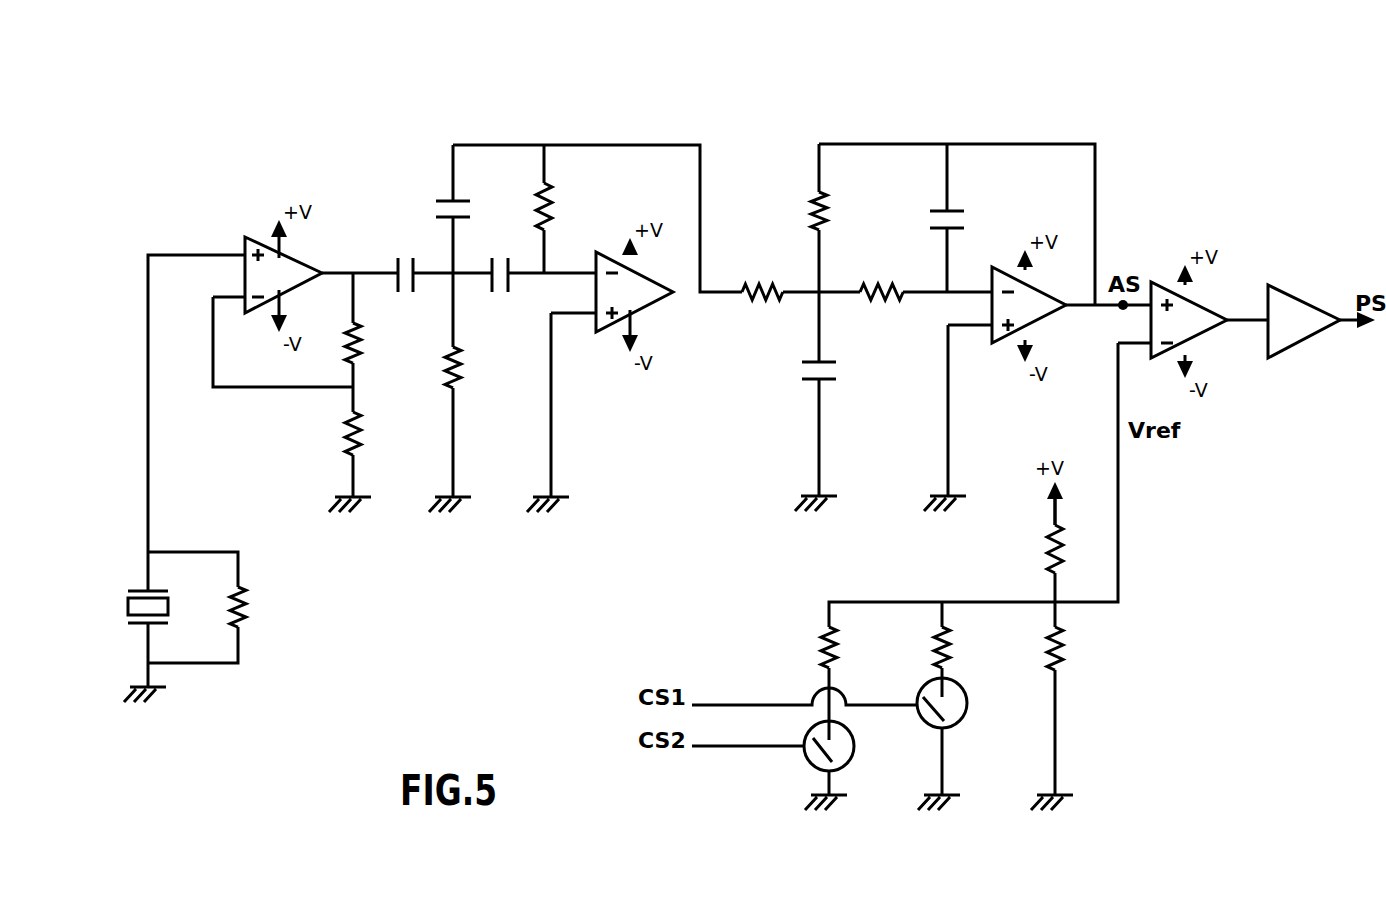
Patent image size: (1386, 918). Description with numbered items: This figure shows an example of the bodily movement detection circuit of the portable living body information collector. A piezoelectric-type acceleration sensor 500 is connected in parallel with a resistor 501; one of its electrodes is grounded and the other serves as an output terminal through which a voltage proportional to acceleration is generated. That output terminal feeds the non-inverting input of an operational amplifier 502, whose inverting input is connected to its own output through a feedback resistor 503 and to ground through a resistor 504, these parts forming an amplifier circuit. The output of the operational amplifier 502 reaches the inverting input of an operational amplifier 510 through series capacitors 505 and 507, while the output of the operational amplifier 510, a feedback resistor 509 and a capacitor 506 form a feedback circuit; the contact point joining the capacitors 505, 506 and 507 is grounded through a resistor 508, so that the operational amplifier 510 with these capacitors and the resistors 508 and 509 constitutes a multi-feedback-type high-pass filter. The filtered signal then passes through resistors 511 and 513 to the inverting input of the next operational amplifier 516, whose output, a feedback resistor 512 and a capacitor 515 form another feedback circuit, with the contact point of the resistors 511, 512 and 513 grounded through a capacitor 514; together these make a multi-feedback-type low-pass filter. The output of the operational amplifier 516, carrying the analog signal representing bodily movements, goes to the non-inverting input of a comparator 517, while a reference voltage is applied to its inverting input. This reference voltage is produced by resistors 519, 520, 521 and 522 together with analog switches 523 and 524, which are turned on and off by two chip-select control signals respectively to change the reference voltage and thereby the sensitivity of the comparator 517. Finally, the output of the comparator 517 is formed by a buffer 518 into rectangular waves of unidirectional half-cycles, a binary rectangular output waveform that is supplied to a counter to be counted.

The piezoelectric-type acceleration sensor 500 is at (131, 592).
The resistor 501 is at (252, 607).
The operational amplifier 502 is at (243, 238).
The feedback resistor 503 is at (363, 350).
The resistor 504 is at (344, 430).
The capacitor 505 is at (401, 252).
The capacitor 506 is at (427, 198).
The capacitor 507 is at (500, 297).
The resistor 508 is at (468, 372).
The feedback resistor 509 is at (553, 211).
The operational amplifier 510 is at (608, 340).
The resistor 511 is at (758, 271).
The feedback resistor 512 is at (801, 203).
The resistor 513 is at (880, 307).
The capacitor 514 is at (802, 370).
The capacitor 515 is at (927, 212).
The operational amplifier 516 is at (997, 280).
The comparator 517 is at (1160, 288).
The buffer 518 is at (1282, 303).
The resistor 519 is at (1040, 546).
The resistor 520 is at (1078, 643).
The resistor 521 is at (960, 648).
The resistor 522 is at (813, 647).
The analog switch 523 is at (960, 720).
The analog switch 524 is at (807, 755).